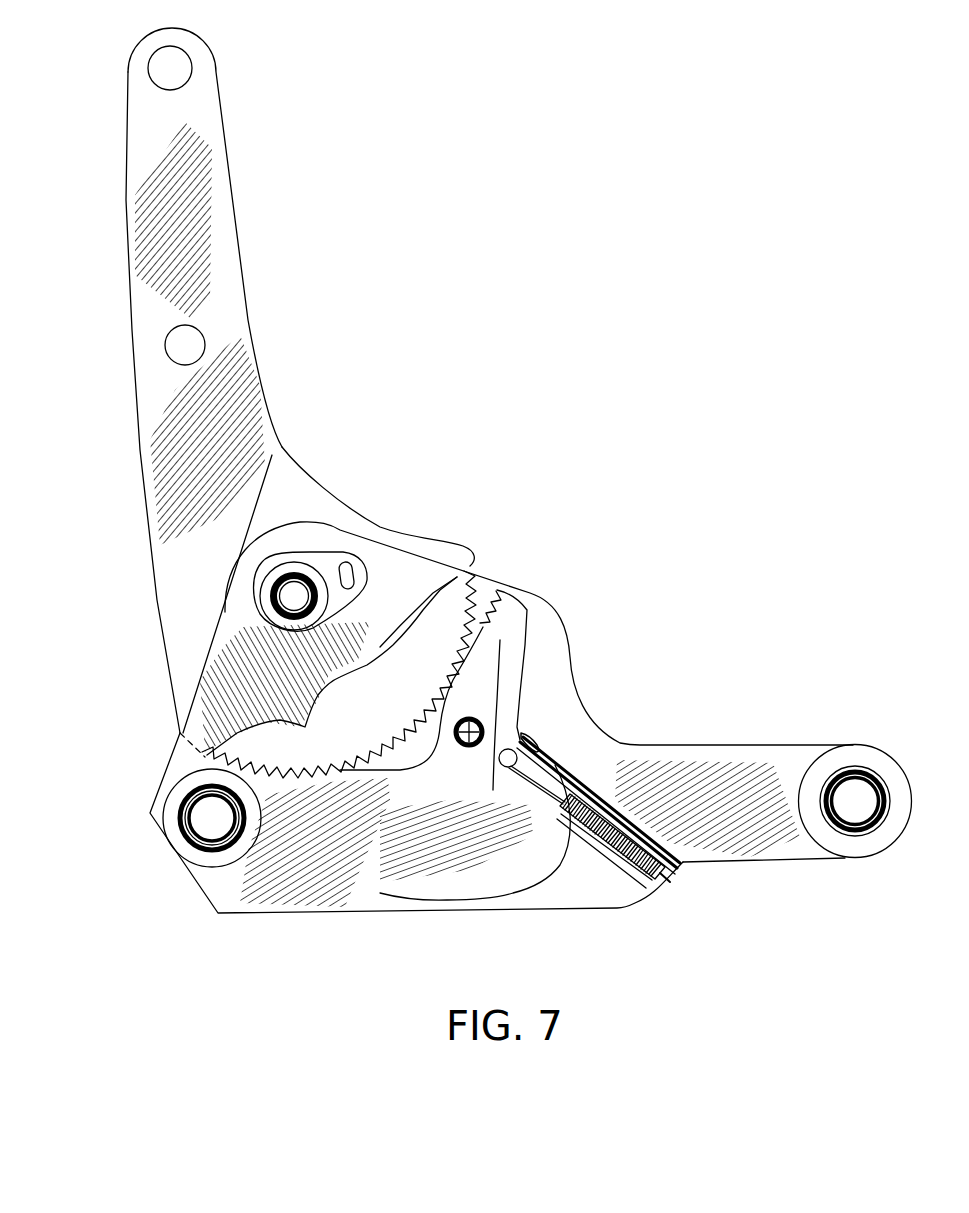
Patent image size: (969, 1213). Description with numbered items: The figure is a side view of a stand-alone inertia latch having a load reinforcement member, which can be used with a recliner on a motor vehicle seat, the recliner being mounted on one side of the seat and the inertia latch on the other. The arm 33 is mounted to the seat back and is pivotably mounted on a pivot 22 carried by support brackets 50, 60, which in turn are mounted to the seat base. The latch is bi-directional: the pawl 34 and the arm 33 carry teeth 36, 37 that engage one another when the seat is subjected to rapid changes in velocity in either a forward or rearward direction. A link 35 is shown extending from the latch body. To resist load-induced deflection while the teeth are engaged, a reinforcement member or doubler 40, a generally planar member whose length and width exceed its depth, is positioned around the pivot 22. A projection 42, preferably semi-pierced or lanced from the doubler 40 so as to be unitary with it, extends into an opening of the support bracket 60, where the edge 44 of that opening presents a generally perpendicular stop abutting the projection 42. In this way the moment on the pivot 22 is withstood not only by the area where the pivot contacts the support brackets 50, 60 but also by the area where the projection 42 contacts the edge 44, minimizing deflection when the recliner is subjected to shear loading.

The pivot 22 is at (293, 597).
The arm 33 is at (140, 353).
The pawl 34 is at (480, 868).
The link arm 35 is at (592, 815).
The teeth 36 is at (410, 708).
The teeth 37 is at (510, 739).
The doubler 40 is at (290, 557).
The projection 42 is at (370, 525).
The edge 44 is at (345, 570).
The support bracket 50 is at (713, 762).
The support bracket 60 is at (173, 750).